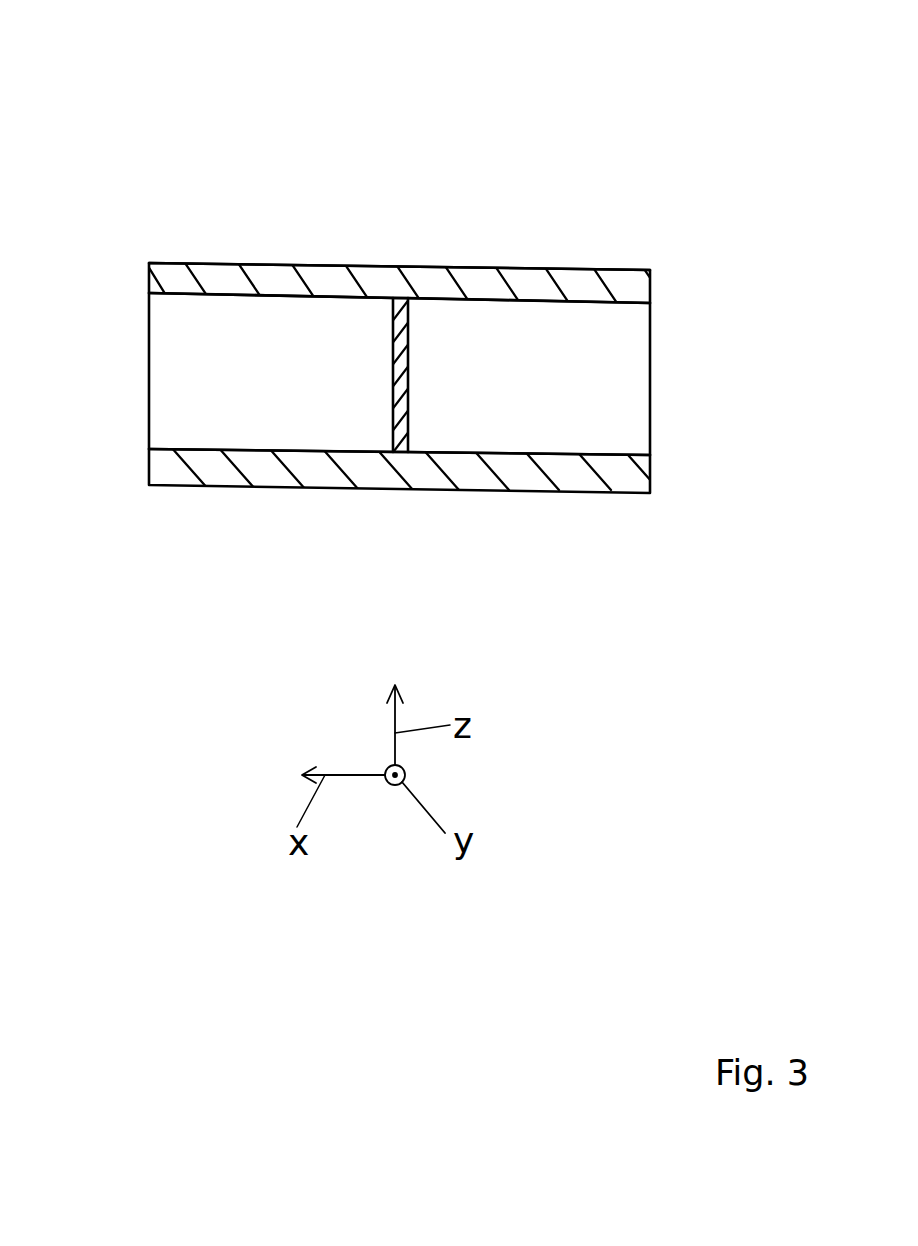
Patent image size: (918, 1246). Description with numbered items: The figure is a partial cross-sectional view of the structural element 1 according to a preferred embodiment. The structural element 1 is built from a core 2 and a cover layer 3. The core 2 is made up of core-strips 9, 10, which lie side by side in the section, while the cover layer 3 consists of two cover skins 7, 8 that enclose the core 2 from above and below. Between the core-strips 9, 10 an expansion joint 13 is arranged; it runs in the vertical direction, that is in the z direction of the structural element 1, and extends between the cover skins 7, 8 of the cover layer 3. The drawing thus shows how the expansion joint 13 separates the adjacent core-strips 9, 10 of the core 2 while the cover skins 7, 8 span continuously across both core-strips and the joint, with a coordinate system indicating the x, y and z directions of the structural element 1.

The structural element 1 is at (404, 322).
The core 2 is at (404, 373).
The cover layer 3 is at (319, 252).
The cover skin 7 is at (540, 287).
The cover skin 8 is at (518, 472).
The core-strip 9 is at (207, 420).
The core-strip 10 is at (513, 402).
The expansion joint 13 is at (400, 423).